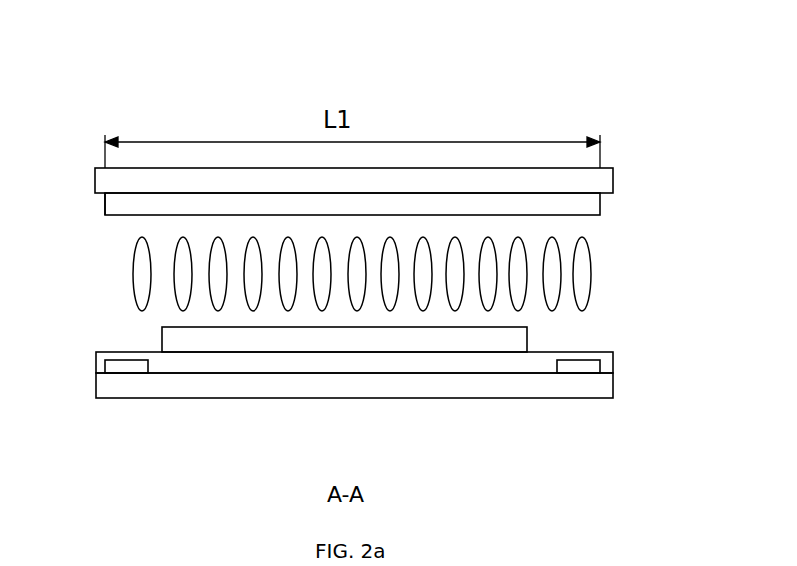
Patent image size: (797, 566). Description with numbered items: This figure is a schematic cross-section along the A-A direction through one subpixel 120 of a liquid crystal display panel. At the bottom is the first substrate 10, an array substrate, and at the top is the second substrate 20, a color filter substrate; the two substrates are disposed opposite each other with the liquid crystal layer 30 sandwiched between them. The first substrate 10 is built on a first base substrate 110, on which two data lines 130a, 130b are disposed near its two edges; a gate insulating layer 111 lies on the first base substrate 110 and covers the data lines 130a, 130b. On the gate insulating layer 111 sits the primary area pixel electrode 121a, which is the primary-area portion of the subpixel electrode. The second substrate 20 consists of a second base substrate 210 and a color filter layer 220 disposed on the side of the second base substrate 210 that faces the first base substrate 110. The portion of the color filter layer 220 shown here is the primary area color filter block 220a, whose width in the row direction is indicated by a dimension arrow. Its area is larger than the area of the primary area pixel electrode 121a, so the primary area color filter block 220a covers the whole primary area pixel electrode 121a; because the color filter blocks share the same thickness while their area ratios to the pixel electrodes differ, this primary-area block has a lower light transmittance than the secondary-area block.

The first substrate 10 is at (87, 328).
The second substrate 20 is at (733, 165).
The liquid crystal layer 30 is at (599, 277).
The first base substrate 110 is at (613, 382).
The gate insulating layer 111 is at (613, 360).
The subpixel 120 is at (229, 83).
The primary area pixel electrode 121a is at (527, 337).
The data line 130a is at (125, 367).
The data line 130b is at (582, 367).
The second base substrate 210 is at (613, 176).
The color filter layer 220 is at (602, 198).
The primary area color filter block 220a is at (105, 202).